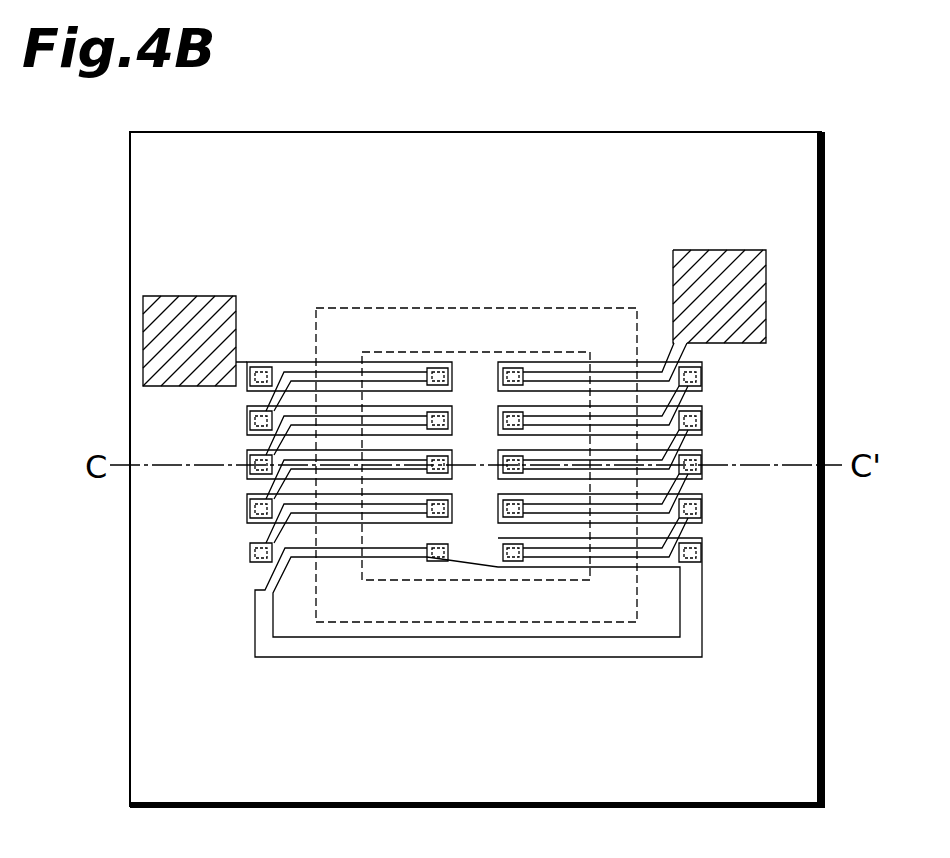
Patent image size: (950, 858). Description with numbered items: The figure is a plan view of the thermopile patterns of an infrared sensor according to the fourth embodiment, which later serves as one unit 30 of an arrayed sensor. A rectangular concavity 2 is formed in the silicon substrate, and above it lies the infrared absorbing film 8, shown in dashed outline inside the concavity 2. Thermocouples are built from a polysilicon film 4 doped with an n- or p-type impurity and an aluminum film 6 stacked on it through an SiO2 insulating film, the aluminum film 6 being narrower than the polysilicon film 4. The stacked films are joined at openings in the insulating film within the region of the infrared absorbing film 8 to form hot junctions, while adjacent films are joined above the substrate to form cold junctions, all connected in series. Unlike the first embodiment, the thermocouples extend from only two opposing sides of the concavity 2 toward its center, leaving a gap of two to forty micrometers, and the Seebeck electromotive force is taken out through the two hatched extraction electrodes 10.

The unit 30 is at (825, 367).
The extraction electrode 10 is at (143, 361).
The concavity 2 is at (392, 315).
The infrared absorbing film 8 is at (476, 352).
The aluminum film 6 is at (566, 568).
The polysilicon film 4 is at (633, 572).